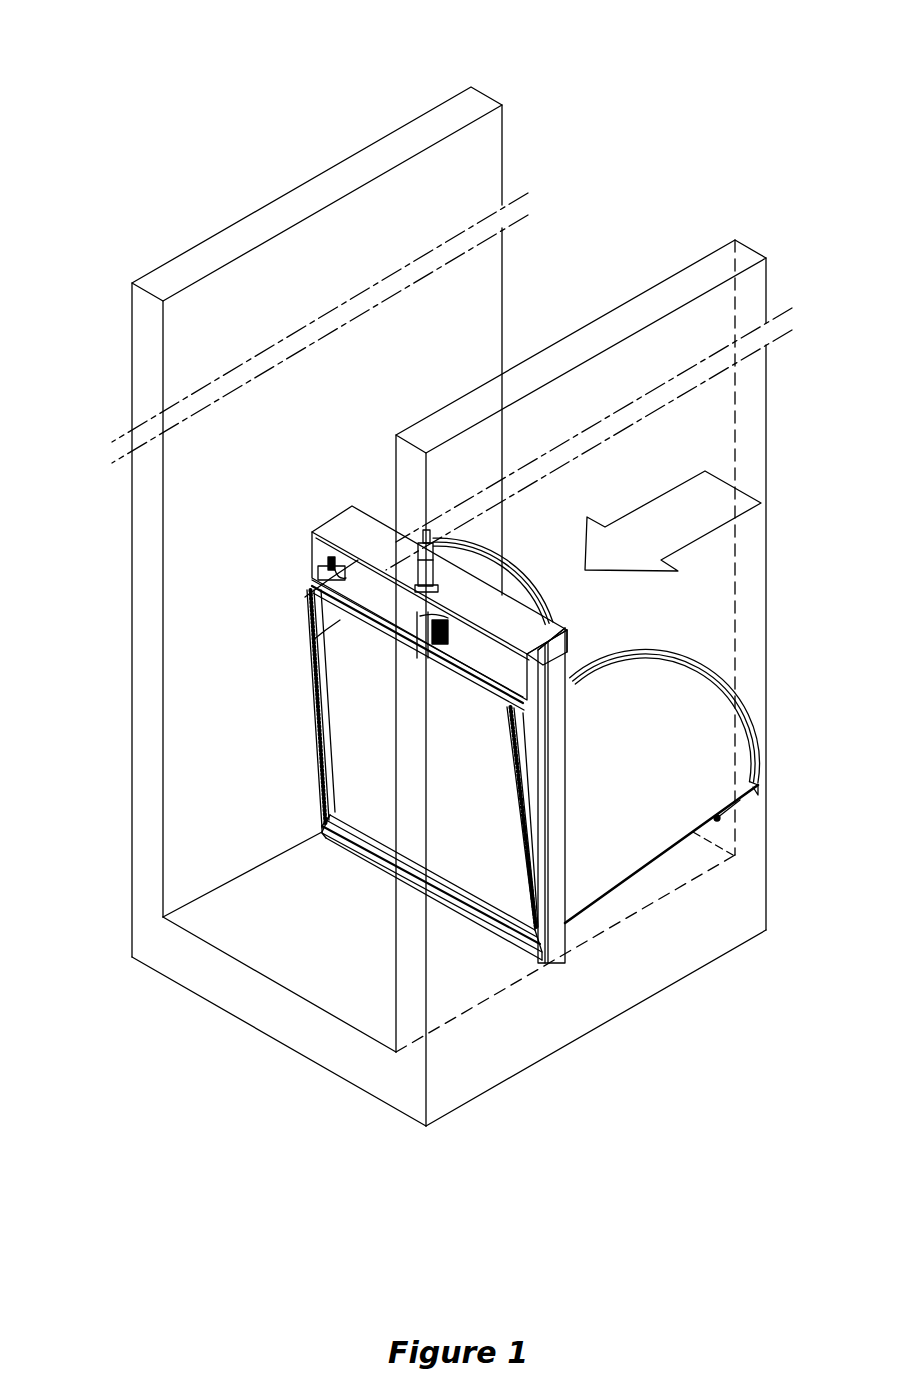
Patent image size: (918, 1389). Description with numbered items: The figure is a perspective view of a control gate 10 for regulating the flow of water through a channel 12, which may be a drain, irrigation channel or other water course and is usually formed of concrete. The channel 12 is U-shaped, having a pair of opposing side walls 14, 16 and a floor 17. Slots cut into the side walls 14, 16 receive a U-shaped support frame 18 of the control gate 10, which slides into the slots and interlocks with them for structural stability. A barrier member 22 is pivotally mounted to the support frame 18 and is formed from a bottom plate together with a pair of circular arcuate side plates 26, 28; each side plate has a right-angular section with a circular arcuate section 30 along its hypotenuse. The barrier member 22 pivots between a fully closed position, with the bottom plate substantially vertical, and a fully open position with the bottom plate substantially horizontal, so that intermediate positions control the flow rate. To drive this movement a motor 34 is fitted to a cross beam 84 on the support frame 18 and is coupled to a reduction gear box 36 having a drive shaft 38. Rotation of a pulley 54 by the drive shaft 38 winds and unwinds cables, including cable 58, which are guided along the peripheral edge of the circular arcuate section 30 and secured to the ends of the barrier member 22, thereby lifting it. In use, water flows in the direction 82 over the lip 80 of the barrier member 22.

The control gate 10 is at (154, 50).
The channel 12 is at (528, 147).
The side wall 14 is at (479, 103).
The side wall 16 is at (745, 254).
The floor 17 is at (307, 948).
The support frame 18 is at (557, 813).
The barrier member 22 is at (340, 666).
The side plate 26 is at (495, 573).
The side plate 28 is at (643, 680).
The circular arcuate section 30 is at (685, 668).
The motor 34 is at (432, 558).
The reduction gear box 36 is at (437, 633).
The drive shaft 38 is at (313, 593).
The pulley 54 is at (328, 558).
The cable 58 is at (718, 819).
The lip 80 is at (323, 618).
The flow direction 82 is at (614, 556).
The cross beam 84 is at (550, 628).